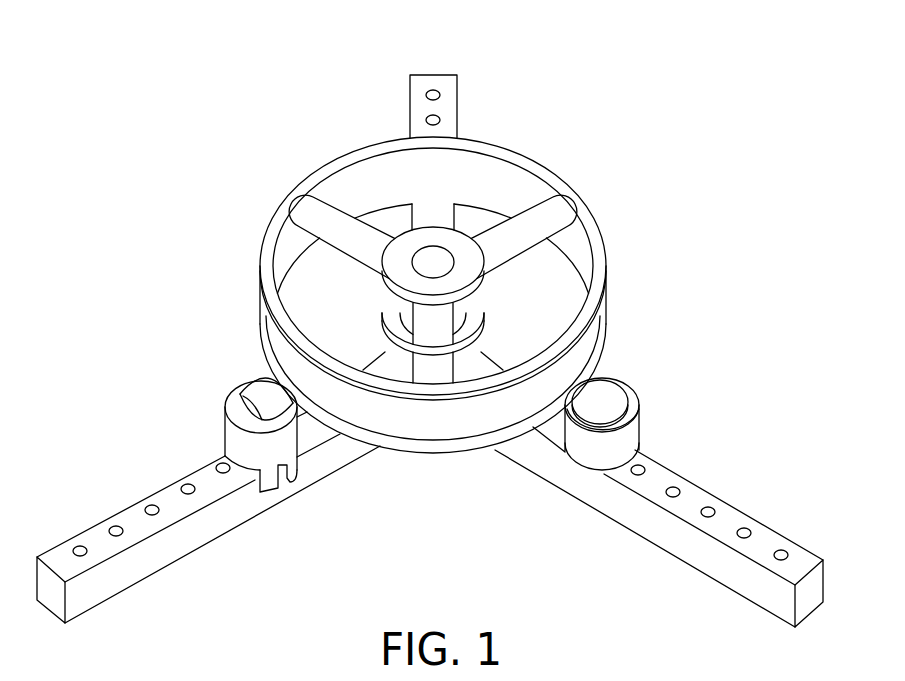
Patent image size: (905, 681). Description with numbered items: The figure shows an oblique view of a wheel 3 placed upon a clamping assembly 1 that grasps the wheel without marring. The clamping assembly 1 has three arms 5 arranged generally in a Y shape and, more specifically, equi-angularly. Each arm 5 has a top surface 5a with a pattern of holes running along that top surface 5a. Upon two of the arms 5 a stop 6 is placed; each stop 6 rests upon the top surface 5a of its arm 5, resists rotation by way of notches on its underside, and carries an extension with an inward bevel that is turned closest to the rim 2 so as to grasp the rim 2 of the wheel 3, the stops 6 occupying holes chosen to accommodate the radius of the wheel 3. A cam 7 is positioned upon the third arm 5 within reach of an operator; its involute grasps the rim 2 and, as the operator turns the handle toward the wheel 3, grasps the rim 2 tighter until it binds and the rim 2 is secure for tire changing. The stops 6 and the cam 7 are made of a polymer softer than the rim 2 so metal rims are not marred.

The clamping assembly 1 is at (197, 113).
The rim 2 is at (355, 148).
The wheel 3 is at (222, 267).
The arm 5 is at (448, 76).
The top surface 5a is at (722, 670).
The stop 6 is at (240, 392).
The cam 7 is at (633, 393).